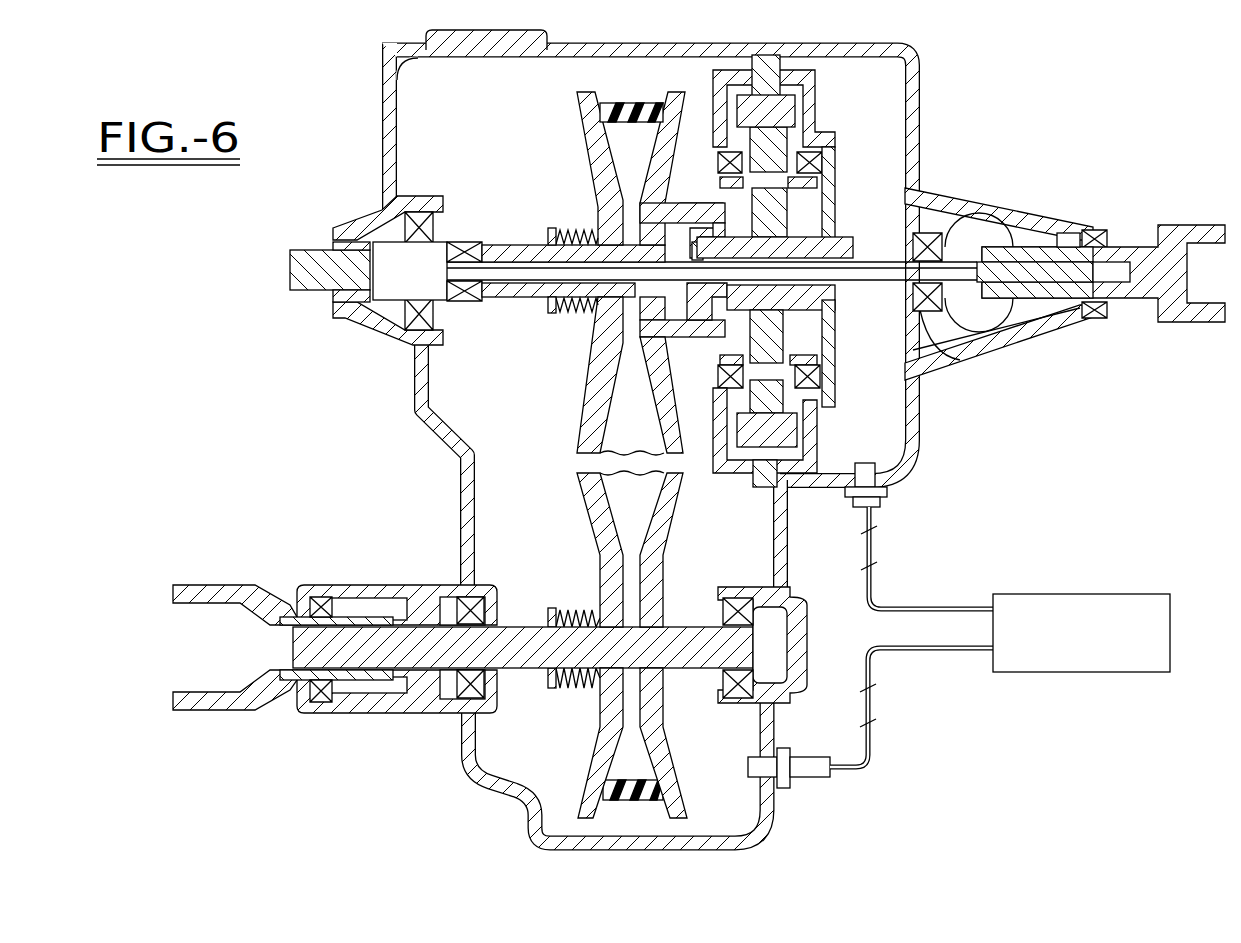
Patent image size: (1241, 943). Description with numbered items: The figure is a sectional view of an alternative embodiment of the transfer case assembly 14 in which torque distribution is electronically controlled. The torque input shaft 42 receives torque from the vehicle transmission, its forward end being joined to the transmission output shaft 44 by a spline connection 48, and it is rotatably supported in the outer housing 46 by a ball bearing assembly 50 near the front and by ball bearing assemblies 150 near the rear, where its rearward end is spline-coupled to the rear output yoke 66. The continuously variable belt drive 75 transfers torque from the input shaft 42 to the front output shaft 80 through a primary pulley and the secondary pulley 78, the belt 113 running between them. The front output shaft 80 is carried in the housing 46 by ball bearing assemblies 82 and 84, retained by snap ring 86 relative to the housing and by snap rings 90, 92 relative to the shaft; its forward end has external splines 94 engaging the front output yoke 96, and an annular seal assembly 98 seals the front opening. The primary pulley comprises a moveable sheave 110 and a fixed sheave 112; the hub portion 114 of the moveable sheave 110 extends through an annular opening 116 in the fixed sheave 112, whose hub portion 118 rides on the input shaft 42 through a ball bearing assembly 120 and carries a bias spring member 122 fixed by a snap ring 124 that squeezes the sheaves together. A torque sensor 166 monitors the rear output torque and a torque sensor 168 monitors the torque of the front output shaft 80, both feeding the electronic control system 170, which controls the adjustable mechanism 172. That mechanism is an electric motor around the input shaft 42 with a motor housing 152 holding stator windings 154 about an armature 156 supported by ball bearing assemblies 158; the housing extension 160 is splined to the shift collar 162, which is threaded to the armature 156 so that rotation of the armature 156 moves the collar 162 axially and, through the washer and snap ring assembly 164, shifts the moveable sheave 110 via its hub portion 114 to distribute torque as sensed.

The transfer case assembly 14 is at (372, 112).
The torque input shaft 42 is at (428, 284).
The transmission output shaft 44 is at (315, 250).
The outer housing 46 is at (382, 180).
The spline connection 48 is at (330, 297).
The ball bearing assembly 50 is at (410, 335).
The rear output yoke 66 is at (1137, 245).
The continuously variable belt drive 75 is at (602, 281).
The secondary pulley 78 is at (668, 568).
The front output shaft 80 is at (530, 627).
The ball bearing assembly 82 is at (478, 703).
The ball bearing assembly 84 is at (742, 695).
The snap ring 86 is at (490, 698).
The snap ring 90 is at (450, 590).
The snap ring 92 is at (755, 674).
The external splines 94 is at (348, 597).
The front output yoke 96 is at (222, 587).
The annular seal assembly 98 is at (335, 702).
The moveable sheave 110 is at (592, 165).
The fixed sheave 112 is at (672, 185).
The belt 113 is at (625, 102).
The hub portion 114 is at (636, 217).
The annular opening 116 is at (720, 183).
The hub portion 118 is at (485, 245).
The ball bearing assembly 120 is at (462, 305).
The bias spring member 122 is at (583, 320).
The snap ring 124 is at (545, 315).
The ball bearing assemblies 150 is at (925, 325).
The motor housing 152 is at (805, 75).
The stator windings 154 is at (790, 120).
The armature 156 is at (790, 195).
The ball bearing assemblies 158 is at (822, 165).
The extension 160 is at (832, 222).
The shift collar 162 is at (840, 305).
The washer and snap ring assembly 164 is at (708, 320).
The torque sensor 166 is at (880, 495).
The torque sensor 168 is at (812, 780).
The electronic control system 170 is at (1052, 593).
The adjustable mechanism 172 is at (815, 130).